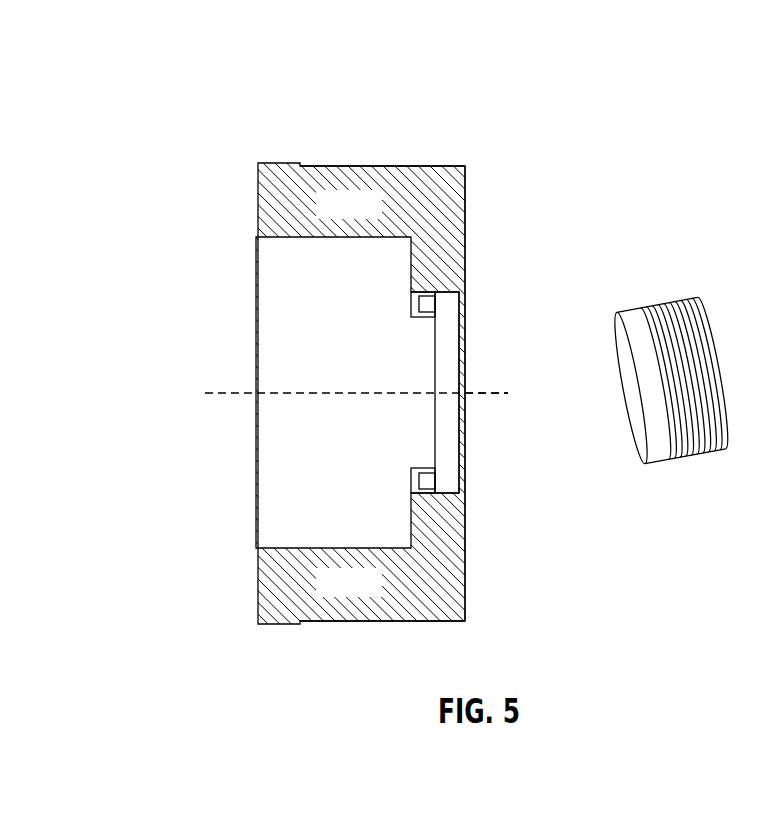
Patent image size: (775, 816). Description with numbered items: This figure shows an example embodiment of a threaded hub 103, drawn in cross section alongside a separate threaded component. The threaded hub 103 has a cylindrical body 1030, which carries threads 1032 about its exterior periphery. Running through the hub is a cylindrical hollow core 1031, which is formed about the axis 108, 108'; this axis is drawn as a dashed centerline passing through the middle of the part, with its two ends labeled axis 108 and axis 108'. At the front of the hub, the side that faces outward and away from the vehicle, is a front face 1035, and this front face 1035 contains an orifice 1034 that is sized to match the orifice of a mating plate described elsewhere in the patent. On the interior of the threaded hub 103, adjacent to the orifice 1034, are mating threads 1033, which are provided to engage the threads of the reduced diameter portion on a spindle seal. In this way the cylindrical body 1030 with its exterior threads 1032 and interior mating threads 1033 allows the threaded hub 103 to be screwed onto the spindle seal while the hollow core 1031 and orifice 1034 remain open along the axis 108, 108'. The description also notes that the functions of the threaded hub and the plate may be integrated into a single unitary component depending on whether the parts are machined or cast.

The threaded hub 103 is at (218, 96).
The cylindrical body 1030 is at (378, 216).
The cylindrical hollow core 1031 is at (280, 301).
The threads 1032 is at (313, 163).
The mating threads 1033 is at (425, 318).
The orifice 1034 is at (476, 417).
The front face 1035 is at (466, 212).
The axis 108 is at (333, 379).
The axis 108' is at (512, 378).